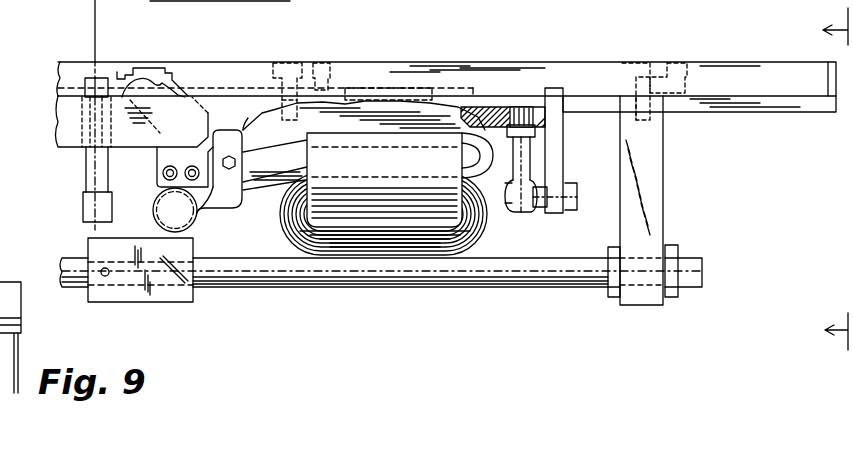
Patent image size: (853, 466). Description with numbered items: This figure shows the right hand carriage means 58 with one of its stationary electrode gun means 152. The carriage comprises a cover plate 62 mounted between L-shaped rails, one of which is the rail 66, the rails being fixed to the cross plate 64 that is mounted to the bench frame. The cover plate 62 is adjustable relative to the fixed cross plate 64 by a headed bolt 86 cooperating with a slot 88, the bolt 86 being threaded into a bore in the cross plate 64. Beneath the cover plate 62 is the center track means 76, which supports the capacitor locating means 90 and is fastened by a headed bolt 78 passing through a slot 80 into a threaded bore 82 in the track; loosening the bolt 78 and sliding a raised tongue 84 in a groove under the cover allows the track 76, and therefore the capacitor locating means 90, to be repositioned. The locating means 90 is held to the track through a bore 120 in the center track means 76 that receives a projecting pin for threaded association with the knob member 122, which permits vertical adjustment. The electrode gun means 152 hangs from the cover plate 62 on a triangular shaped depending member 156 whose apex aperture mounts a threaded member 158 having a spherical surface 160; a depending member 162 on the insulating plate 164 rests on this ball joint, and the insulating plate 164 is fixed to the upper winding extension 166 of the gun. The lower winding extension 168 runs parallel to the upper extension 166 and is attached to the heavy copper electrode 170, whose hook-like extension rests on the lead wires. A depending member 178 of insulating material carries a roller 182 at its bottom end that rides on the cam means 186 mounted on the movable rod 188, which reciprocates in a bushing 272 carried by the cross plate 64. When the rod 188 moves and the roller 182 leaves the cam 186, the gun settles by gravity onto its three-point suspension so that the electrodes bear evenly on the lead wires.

The right hand carriage means 58 is at (402, 307).
The cover plate 62 is at (600, 66).
The cross plate 64 is at (647, 152).
The L-shaped rail 66 is at (817, 104).
The center track means 76 is at (335, 102).
The headed bolt 78 is at (285, 62).
The slot 80 is at (315, 62).
The threaded bore 82 is at (288, 101).
The raised tongue 84 is at (422, 92).
The headed bolt 86 is at (656, 62).
The slot 88 is at (666, 86).
The capacitor locating means 90 is at (83, 79).
The bore 120 is at (80, 119).
The knob member 122 is at (83, 197).
The stationary electrode gun means 152 is at (382, 208).
The triangular shaped depending member 156 is at (552, 143).
The threaded member 158 is at (538, 203).
The spherical surface 160 is at (532, 201).
The depending member 162 is at (518, 157).
The insulating plate 164 is at (498, 108).
The upper winding extension 166 is at (282, 130).
The lower winding extension 168 is at (257, 172).
The copper electrode 170 is at (183, 158).
The depending member 178 is at (209, 202).
The roller 182 is at (170, 210).
The cam means 186 is at (116, 304).
The movable rod 188 is at (271, 268).
The bushing 272 is at (672, 253).